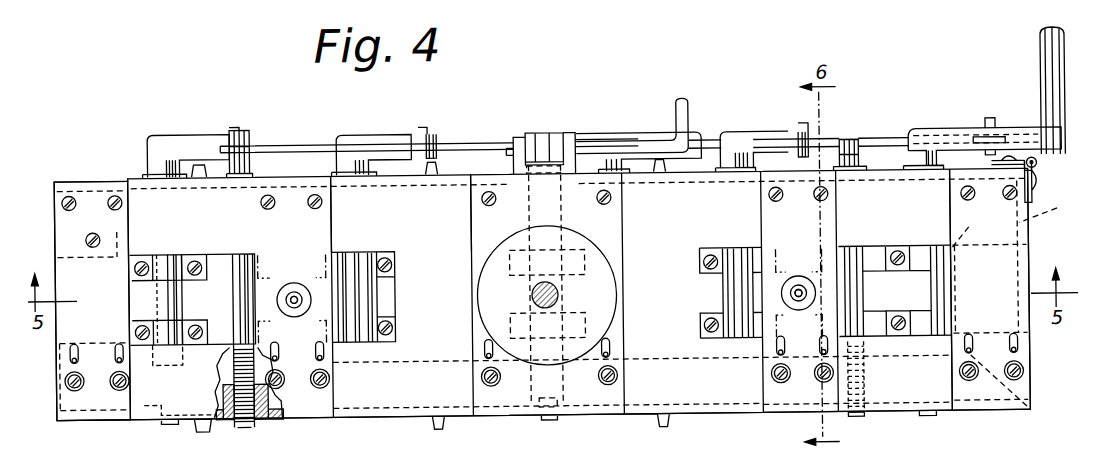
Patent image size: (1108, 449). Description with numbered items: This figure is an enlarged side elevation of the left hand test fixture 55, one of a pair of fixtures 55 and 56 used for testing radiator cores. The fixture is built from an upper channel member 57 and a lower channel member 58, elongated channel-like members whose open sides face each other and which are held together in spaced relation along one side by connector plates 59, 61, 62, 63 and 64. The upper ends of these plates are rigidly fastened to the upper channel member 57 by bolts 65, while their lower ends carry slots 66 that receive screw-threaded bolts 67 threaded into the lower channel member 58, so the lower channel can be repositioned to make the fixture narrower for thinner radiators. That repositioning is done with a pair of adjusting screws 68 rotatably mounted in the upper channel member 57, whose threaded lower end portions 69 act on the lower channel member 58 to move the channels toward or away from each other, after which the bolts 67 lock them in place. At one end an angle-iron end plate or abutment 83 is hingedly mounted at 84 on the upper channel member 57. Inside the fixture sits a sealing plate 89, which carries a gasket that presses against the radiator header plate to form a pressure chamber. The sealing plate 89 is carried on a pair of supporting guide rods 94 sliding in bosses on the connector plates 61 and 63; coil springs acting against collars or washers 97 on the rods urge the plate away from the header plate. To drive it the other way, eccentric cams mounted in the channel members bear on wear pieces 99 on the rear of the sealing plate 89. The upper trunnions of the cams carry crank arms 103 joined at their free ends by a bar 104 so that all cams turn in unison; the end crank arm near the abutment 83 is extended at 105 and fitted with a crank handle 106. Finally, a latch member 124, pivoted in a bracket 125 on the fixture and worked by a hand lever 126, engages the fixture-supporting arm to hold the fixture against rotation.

The test fixture 55 is at (98, 168).
The test fixture 56 is at (528, 288).
The upper channel member 57 is at (447, 187).
The lower channel member 58 is at (408, 416).
The connector plate 59 is at (72, 256).
The connector plate 61 is at (264, 292).
The connector plate 62 is at (476, 325).
The connector plate 63 is at (832, 292).
The connector plate 64 is at (1027, 266).
The bolts 65 is at (72, 205).
The slots 66 is at (116, 345).
The screw-threaded bolts 67 is at (78, 385).
The adjusting screws 68 is at (252, 150).
The threaded lower end portions 69 is at (245, 426).
The end plate or abutment 83 is at (1016, 221).
The pivotal mounting 84 is at (1039, 170).
The sealing plate 89 is at (420, 262).
The supporting guide rods 94 is at (292, 304).
The collars or washers 97 is at (290, 286).
The wear pieces 99 is at (396, 317).
The crank arms 103 is at (193, 134).
The bar 104 is at (490, 142).
The extended portion of crank arm 105 is at (1051, 158).
The crank handle 106 is at (1045, 58).
The latch member 124 is at (560, 132).
The bracket 125 is at (573, 138).
The hand lever 126 is at (689, 103).